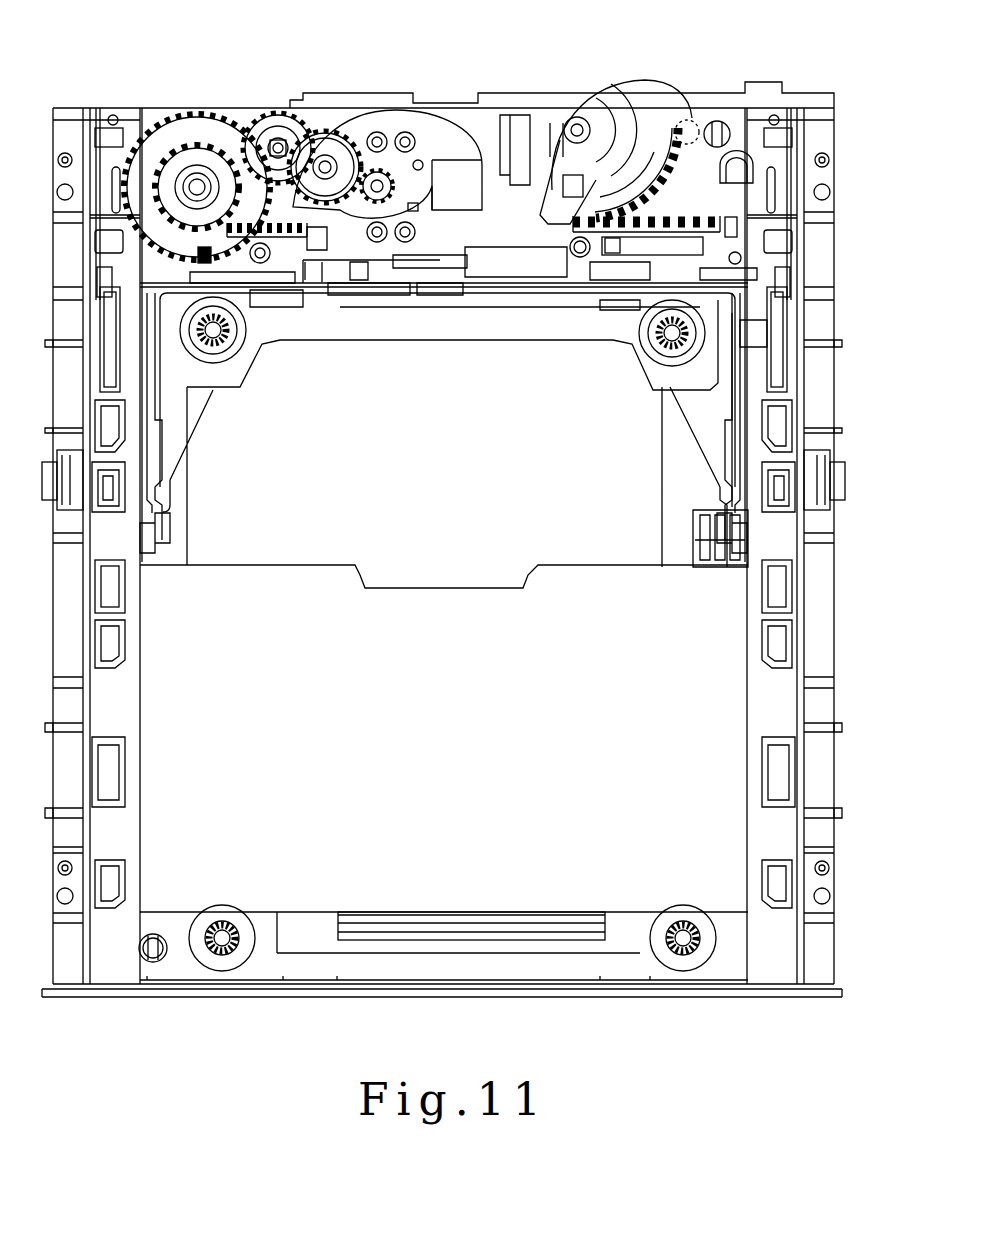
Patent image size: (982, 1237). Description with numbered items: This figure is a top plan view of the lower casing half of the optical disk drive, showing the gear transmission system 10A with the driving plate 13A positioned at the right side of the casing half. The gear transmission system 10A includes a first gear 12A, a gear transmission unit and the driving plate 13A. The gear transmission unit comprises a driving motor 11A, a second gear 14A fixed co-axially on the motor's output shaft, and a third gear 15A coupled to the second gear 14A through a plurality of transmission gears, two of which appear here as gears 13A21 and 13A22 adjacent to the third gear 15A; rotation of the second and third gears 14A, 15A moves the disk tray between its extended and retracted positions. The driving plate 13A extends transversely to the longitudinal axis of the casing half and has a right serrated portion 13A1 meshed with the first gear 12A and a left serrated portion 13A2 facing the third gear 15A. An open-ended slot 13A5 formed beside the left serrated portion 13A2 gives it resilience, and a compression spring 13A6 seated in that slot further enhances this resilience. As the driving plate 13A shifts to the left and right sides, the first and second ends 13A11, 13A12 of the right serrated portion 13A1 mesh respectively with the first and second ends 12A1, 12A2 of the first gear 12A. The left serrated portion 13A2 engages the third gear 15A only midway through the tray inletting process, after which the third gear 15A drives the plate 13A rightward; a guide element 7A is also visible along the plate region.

The gear transmission system 10A is at (413, 78).
The slider 7A is at (313, 298).
The driving motor 11A is at (430, 182).
The first gear 12A is at (630, 190).
The first end of the first gear 12A1 is at (687, 120).
The second end of the first gear 12A2 is at (575, 128).
The driving plate 13A is at (350, 255).
The right serrated portion 13A1 is at (640, 237).
The left serrated portion 13A2 is at (270, 295).
The open-ended slot 13A5 is at (262, 264).
The compression spring 13A6 is at (205, 265).
The first end of the right serrated portion 13A11 is at (718, 178).
The second end of the right serrated portion 13A12 is at (567, 235).
The intermediate gear 13A21 is at (280, 150).
The pinion 13A22 is at (165, 185).
The second gear 14A is at (377, 165).
The third gear 15A is at (195, 170).